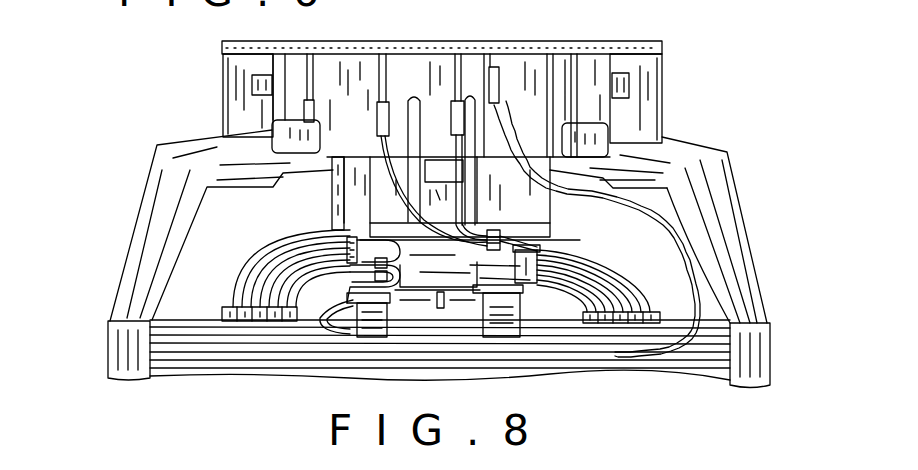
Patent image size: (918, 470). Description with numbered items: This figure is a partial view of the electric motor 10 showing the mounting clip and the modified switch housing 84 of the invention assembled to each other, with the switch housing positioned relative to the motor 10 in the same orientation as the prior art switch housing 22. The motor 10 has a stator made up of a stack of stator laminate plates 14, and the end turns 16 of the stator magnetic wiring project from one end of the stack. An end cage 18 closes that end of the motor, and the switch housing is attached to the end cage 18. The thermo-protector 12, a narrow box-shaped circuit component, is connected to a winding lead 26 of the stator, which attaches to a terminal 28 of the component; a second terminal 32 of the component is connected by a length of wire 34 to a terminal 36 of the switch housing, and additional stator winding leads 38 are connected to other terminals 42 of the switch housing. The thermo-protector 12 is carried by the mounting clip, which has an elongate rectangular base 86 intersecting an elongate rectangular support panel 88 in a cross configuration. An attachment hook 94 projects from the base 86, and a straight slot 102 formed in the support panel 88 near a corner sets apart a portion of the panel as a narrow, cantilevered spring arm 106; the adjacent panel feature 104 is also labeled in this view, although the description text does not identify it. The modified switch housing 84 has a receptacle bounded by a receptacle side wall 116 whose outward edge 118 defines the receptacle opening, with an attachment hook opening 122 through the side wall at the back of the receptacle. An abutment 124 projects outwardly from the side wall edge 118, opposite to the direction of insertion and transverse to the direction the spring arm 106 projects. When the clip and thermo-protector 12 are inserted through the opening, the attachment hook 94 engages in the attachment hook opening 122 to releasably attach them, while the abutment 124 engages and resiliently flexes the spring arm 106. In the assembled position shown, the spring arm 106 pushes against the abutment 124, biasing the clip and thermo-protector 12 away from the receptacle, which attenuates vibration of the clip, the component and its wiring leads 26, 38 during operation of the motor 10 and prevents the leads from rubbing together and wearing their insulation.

The motor 10 is at (726, 120).
The thermo-protector 12 is at (620, 347).
The stator laminate plates 14 is at (737, 360).
The end turns 16 is at (627, 277).
The end cage 18 is at (717, 167).
The switch housing 22 is at (653, 53).
The winding lead 26 is at (323, 322).
The terminal 28 is at (377, 327).
The second terminal 32 is at (500, 330).
The wire 34 is at (620, 345).
The terminal of the switch housing 36 is at (490, 95).
The stator winding leads 38 is at (378, 152).
The terminals of the switch housing 42 is at (388, 108).
The modified switch housing 84 is at (333, 212).
The base 86 is at (458, 285).
The support panel 88 is at (498, 273).
The attachment hook 94 is at (459, 176).
The slot 102 is at (325, 253).
The cable loop 104 is at (335, 248).
The spring arm 106 is at (222, 136).
The receptacle side wall 116 is at (344, 176).
The outward edge 118 is at (555, 232).
The attachment hook opening 122 is at (445, 178).
The abutment 124 is at (345, 238).